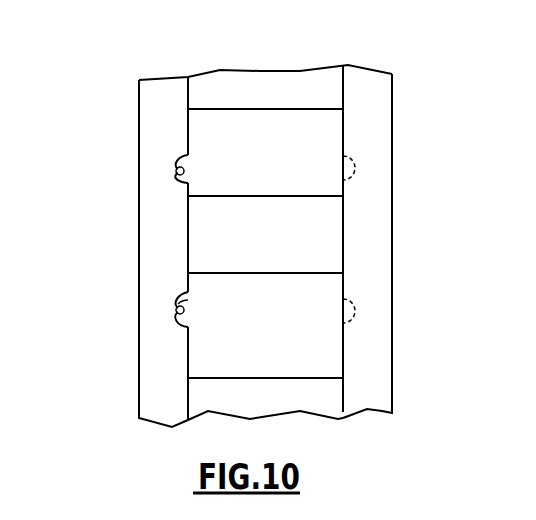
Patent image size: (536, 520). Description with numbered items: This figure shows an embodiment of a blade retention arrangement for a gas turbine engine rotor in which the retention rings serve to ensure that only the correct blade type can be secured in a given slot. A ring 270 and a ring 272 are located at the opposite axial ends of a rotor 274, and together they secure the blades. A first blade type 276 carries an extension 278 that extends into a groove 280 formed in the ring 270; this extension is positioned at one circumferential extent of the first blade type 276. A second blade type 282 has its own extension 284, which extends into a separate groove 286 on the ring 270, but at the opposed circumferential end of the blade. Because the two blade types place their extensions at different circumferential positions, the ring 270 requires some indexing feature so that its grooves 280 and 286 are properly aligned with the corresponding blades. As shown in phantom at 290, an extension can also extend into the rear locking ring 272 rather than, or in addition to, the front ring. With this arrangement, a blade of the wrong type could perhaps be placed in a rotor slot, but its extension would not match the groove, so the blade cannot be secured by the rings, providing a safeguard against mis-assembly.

The ring 270 is at (163, 93).
The ring 272 is at (362, 80).
The rotor 274 is at (242, 86).
The first blade type 276 is at (278, 156).
The extension 278 is at (180, 166).
The groove 280 is at (177, 173).
The second blade type 282 is at (278, 364).
The extension 284 is at (178, 315).
The groove 286 is at (188, 300).
The phantom extension 290 is at (342, 170).